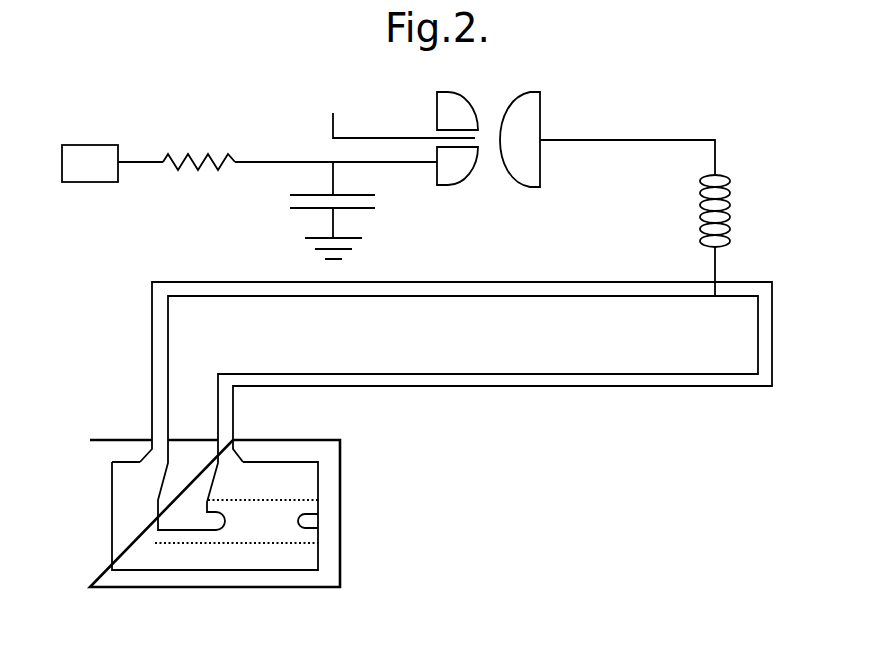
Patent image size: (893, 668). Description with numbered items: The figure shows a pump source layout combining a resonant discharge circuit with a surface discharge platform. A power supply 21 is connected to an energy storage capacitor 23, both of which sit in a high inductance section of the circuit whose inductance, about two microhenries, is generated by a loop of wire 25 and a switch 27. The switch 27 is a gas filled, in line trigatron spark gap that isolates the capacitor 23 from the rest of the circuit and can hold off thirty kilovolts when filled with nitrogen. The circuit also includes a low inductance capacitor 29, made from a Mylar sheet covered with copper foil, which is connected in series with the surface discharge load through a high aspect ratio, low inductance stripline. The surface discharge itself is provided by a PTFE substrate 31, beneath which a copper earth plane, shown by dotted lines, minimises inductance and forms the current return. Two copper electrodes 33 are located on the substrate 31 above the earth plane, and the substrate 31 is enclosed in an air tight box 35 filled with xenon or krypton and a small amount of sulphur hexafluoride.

The power supply 21 is at (90, 163).
The energy storage capacitor 23 is at (281, 204).
The loop of wire 25 is at (681, 205).
The switch 27 is at (485, 186).
The low inductance capacitor 29 is at (570, 352).
The PTFE substrate 31 is at (303, 482).
The copper electrodes 33 is at (325, 522).
The air tight box 35 is at (342, 445).